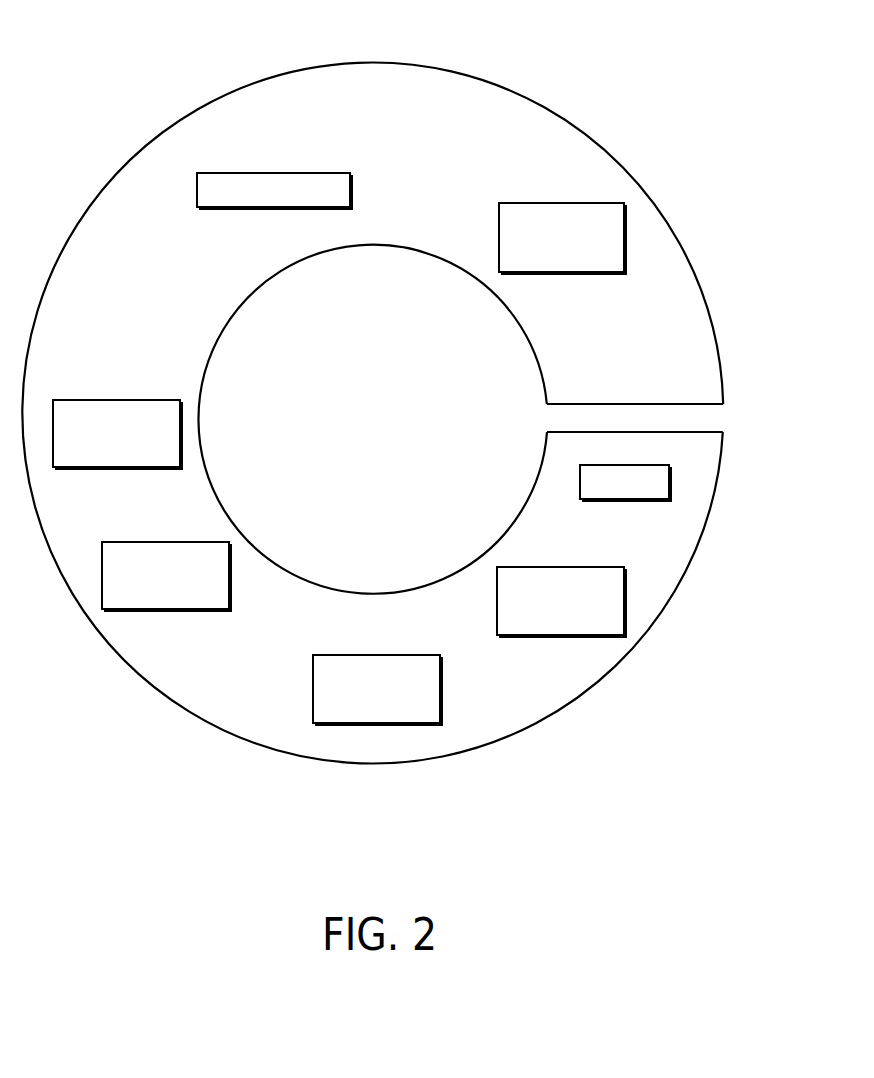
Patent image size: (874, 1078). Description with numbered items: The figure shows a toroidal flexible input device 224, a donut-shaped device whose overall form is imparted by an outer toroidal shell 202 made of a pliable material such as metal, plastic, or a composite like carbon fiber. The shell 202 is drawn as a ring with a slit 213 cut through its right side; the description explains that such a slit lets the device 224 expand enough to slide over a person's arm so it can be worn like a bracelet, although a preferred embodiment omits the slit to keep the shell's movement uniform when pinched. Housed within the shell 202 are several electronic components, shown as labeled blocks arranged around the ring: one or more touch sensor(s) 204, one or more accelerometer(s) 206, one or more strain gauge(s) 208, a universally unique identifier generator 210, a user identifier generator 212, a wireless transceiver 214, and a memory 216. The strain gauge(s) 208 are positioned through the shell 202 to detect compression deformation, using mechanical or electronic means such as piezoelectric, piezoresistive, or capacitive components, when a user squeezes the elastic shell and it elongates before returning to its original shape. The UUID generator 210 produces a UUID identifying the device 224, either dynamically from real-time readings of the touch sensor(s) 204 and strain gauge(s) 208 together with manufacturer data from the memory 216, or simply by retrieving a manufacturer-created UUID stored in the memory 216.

The outer toroidal shell 202 is at (375, 72).
The touch sensor(s) 204 is at (112, 400).
The accelerometer(s) 206 is at (247, 208).
The strain gauge(s) 208 is at (572, 272).
The universally unique identifier (UUID) generator 210 is at (183, 609).
The user identifier generator 212 is at (440, 690).
The gap in ring 213 is at (731, 408).
The wireless transceiver 214 is at (624, 623).
The memory 216 is at (669, 478).
The toroidal flexible input device 224 is at (664, 178).